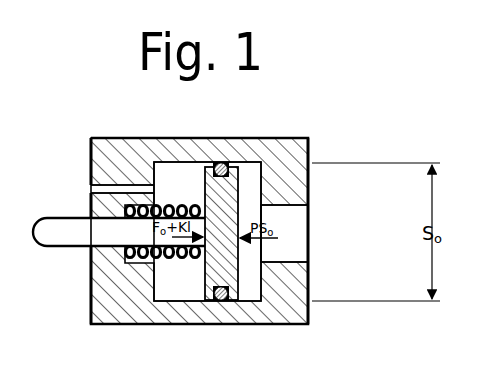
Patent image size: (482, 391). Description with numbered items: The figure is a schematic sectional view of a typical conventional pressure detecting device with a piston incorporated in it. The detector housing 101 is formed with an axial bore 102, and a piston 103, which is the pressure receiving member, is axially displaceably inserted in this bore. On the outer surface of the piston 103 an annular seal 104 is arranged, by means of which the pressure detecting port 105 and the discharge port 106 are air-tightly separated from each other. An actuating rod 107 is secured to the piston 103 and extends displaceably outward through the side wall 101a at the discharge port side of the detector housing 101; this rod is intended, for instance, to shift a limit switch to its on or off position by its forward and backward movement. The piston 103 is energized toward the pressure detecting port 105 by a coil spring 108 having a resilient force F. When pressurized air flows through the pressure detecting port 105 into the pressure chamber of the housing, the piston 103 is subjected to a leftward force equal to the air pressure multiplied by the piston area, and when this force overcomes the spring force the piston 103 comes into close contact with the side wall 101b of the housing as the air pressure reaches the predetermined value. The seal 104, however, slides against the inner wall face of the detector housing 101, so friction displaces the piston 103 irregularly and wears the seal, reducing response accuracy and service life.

The detector housing 101 is at (274, 138).
The side wall 101a is at (92, 210).
The side wall 101b is at (297, 179).
The axial bore 102 is at (178, 176).
The piston 103 is at (226, 268).
The annular seal 104 is at (225, 298).
The pressure detecting port 105 is at (292, 230).
The discharge port 106 is at (92, 188).
The actuating rod 107 is at (50, 247).
The coil spring 108 is at (178, 262).